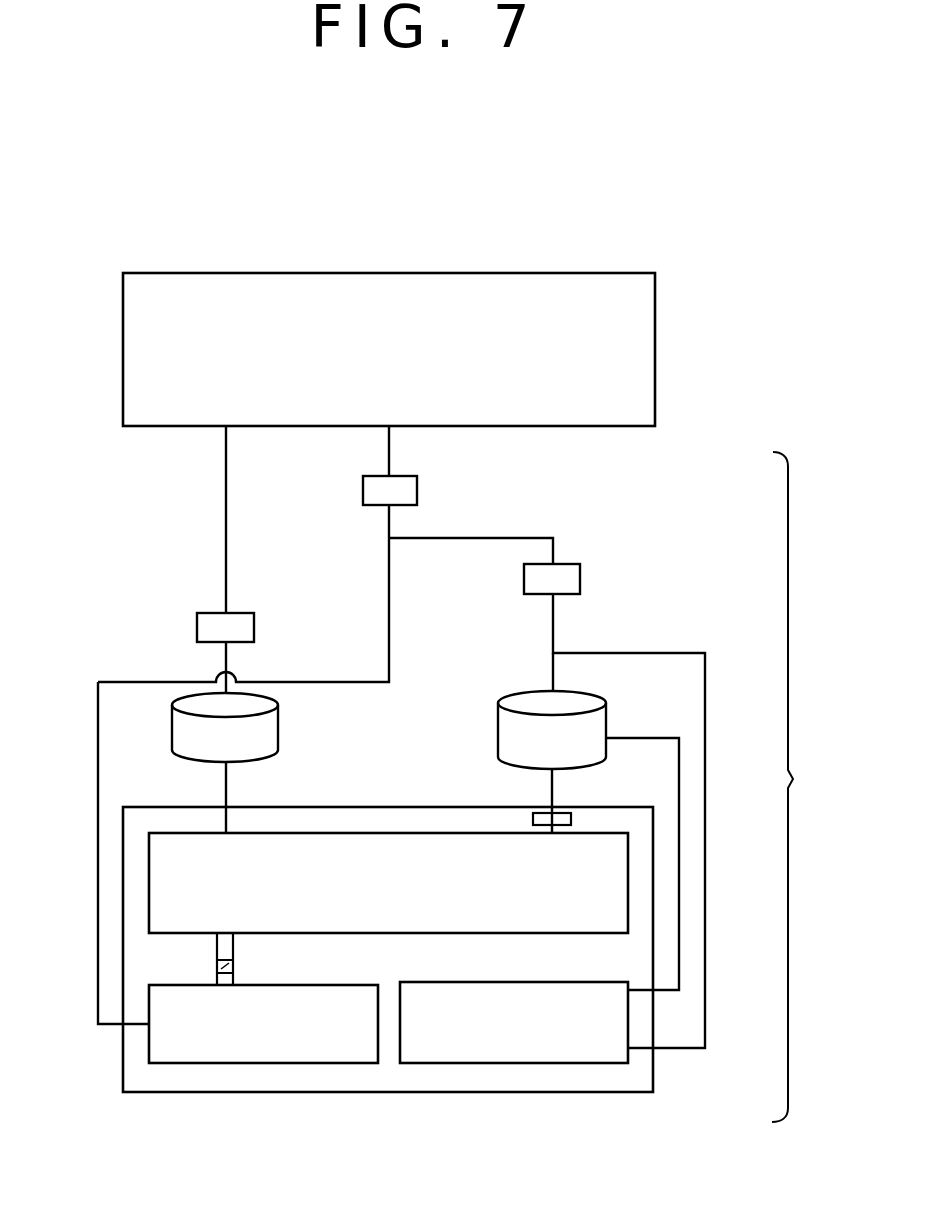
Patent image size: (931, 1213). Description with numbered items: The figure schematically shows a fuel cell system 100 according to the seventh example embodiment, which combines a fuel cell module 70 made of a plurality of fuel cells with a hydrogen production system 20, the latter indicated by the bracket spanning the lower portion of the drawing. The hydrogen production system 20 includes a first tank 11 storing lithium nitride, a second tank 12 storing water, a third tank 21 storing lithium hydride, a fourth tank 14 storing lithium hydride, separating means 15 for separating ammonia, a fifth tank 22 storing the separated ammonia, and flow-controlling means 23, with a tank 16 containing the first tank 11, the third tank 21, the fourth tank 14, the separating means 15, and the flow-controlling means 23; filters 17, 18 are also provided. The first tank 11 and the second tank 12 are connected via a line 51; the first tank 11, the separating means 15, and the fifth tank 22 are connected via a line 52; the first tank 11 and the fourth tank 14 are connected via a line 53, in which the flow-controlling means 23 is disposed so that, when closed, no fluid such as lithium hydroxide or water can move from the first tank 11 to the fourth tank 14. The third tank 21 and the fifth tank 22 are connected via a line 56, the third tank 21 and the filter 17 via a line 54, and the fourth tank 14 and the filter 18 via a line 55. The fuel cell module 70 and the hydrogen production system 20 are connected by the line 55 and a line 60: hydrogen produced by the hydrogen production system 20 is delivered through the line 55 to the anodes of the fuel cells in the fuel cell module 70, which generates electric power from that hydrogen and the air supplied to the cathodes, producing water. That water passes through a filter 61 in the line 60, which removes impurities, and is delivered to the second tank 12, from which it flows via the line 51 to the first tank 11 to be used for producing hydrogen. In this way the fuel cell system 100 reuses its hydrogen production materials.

The fuel cell system 100 is at (363, 182).
The fuel cell module 70 is at (655, 348).
The line 60 is at (226, 556).
The filter 61 is at (197, 632).
The line 55 is at (389, 452).
The filter 18 is at (417, 487).
The filter 17 is at (580, 578).
The line 54 is at (553, 620).
The second tank 12 is at (272, 732).
The line 51 is at (226, 792).
The fifth tank 22 is at (520, 702).
The line 56 is at (679, 803).
The line 52 is at (552, 781).
The separating means 15 is at (533, 817).
The tank 16 is at (178, 1092).
The first tank 11 is at (400, 848).
The line 53 is at (217, 958).
The flow-controlling means 23 is at (233, 962).
The fourth tank 14 is at (295, 1043).
The third tank 21 is at (575, 1043).
The hydrogen production system 20 is at (809, 787).